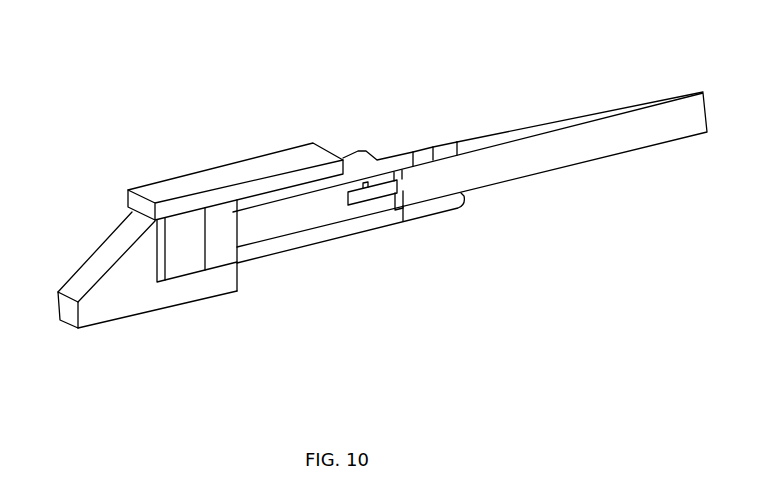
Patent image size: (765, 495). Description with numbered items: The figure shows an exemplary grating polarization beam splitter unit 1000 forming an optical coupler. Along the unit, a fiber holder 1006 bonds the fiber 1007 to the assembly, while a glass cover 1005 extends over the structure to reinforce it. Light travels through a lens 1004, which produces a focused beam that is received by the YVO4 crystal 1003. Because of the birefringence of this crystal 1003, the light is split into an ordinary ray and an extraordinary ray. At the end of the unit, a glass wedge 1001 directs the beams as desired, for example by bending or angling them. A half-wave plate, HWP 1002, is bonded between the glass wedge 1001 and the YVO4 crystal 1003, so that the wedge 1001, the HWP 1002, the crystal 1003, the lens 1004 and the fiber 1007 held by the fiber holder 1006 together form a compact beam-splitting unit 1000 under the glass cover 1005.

The fiber optic connector assembly 1000 is at (352, 100).
The glass wedge 1001 is at (95, 248).
The HWP 1002 is at (161, 286).
The YVO4 crystal 1003 is at (193, 269).
The lens 1004 is at (230, 254).
The glass cover 1005 is at (246, 159).
The fiber holder 1006 is at (420, 218).
The fiber 1007 is at (499, 136).